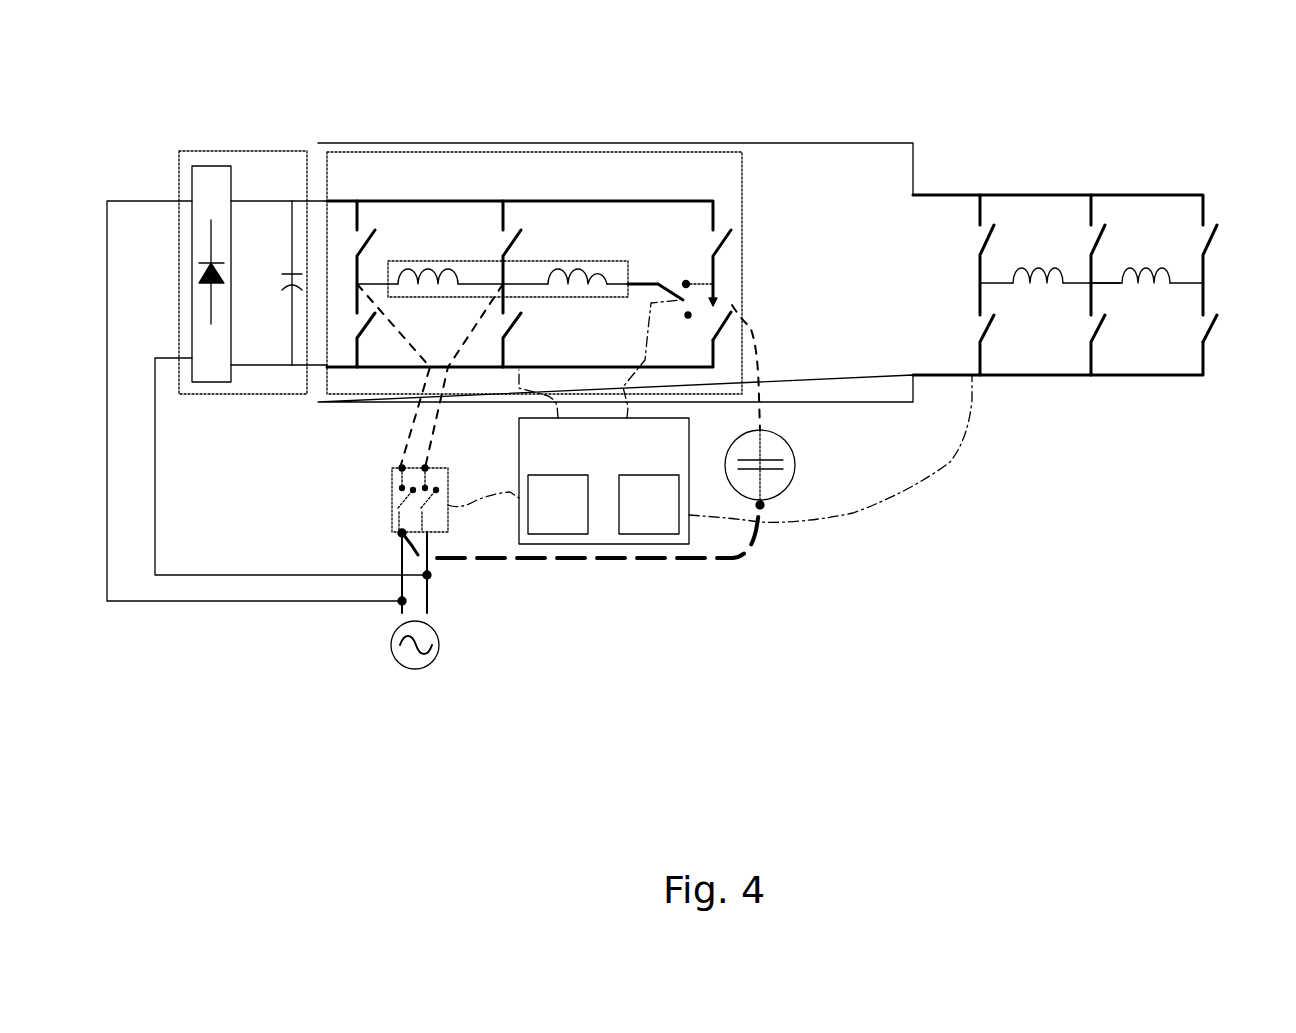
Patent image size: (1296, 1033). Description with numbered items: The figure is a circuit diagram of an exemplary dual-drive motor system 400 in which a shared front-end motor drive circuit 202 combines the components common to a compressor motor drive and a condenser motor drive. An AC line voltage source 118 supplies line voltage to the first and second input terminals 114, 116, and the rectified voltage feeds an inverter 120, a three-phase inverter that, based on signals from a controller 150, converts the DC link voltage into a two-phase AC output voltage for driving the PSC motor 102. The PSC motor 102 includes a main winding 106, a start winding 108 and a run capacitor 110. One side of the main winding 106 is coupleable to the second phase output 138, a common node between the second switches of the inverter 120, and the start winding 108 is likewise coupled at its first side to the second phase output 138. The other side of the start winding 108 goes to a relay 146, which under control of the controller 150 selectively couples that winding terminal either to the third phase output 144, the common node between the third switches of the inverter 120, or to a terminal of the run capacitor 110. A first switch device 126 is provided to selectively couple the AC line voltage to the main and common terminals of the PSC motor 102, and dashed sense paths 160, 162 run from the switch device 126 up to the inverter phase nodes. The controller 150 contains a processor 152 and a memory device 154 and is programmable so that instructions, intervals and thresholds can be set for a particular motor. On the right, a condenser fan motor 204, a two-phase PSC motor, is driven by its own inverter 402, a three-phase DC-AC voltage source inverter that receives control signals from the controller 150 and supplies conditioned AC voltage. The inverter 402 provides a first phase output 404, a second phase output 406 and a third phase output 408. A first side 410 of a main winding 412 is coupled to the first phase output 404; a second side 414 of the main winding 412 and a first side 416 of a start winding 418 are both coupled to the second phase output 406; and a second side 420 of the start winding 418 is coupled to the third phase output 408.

The dual-drive motor system 400 is at (277, 58).
The shared front-end motor drive circuit 202 is at (197, 151).
The inverter 120 is at (418, 150).
The PSC motor 102 is at (624, 261).
The main winding 106 is at (430, 268).
The start winding 108 is at (585, 287).
The second phase output 138 is at (505, 290).
The third phase output 144 is at (717, 280).
The relay 146 is at (655, 297).
The run capacitor 110 is at (782, 432).
The controller 150 is at (519, 430).
The processor 152 is at (558, 504).
The memory device 154 is at (649, 504).
The first sense line 160 is at (413, 429).
The second sense line 162 is at (423, 441).
The first switch device 126 is at (391, 478).
The first input terminal 114 is at (400, 556).
The second input terminal 116 is at (430, 593).
The AC line voltage source 118 is at (392, 642).
The condenser fan motor 204 is at (1120, 320).
The inverter 402 is at (1045, 377).
The first phase output 404 is at (979, 282).
The second phase output 406 is at (1090, 286).
The third phase output 408 is at (1205, 282).
The first side of main winding 410 is at (1000, 282).
The main winding 412 is at (1052, 265).
The second side of main winding 414 is at (1067, 282).
The first side of start winding 416 is at (1120, 282).
The start winding 418 is at (1162, 265).
The second side of start winding 420 is at (1170, 282).